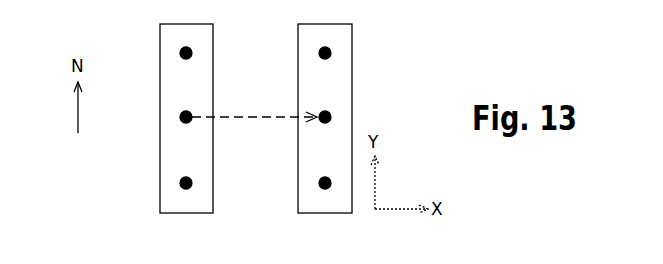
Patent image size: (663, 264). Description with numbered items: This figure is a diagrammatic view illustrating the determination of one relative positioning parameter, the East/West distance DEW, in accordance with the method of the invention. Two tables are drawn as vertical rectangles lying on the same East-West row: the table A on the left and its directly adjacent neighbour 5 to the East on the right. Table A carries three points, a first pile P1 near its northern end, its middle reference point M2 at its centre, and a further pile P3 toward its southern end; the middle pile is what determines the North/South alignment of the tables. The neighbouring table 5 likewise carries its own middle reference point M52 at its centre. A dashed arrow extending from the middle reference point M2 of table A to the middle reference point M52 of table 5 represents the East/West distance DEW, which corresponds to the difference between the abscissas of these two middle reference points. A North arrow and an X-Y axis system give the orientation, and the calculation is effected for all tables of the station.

The table A is at (209, 53).
The pile P1 is at (186, 53).
The middle reference point M2 is at (186, 117).
The pile P3 is at (186, 183).
The East/West distance DEW is at (259, 120).
The directly adjacent neighbour table 5 is at (343, 69).
The middle reference point of the adjacent table M52 is at (328, 113).